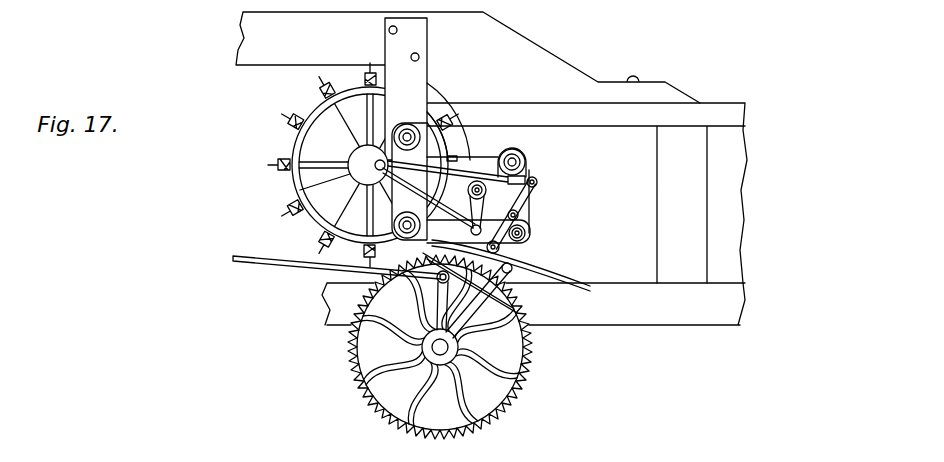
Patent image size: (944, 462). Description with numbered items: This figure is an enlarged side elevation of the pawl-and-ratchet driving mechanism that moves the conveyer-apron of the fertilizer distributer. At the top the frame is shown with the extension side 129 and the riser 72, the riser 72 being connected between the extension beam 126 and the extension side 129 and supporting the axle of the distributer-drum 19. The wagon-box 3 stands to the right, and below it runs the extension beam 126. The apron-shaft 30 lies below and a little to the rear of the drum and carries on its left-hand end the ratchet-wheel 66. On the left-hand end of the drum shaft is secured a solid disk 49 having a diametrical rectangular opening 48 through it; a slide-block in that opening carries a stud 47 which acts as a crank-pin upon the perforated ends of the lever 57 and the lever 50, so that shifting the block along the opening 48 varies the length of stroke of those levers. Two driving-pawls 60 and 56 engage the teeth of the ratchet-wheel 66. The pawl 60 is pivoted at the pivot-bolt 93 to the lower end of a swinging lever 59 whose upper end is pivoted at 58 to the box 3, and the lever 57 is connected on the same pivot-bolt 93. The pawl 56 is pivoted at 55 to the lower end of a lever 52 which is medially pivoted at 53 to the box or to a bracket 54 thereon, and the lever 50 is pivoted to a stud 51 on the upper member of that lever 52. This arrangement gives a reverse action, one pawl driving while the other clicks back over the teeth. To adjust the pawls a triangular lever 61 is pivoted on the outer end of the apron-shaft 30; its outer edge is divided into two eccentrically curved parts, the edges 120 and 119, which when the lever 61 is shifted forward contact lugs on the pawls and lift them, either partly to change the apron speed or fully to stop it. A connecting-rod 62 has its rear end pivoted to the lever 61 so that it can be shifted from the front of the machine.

The wagon-box 3 is at (642, 157).
The distributer-drum 19 is at (315, 101).
The apron-shaft 30 is at (452, 352).
The stud 47 is at (355, 152).
The diametrical rectangular opening 48 is at (350, 174).
The solid disk 49 is at (375, 168).
The lever 50 is at (510, 150).
The stud 51 is at (523, 200).
The lever 52 is at (520, 212).
The pivot 53 is at (530, 212).
The bracket 54 is at (432, 117).
The pivot 55 is at (498, 247).
The driving-pawl 56 is at (526, 225).
The lever 57 is at (433, 203).
The pivot 58 is at (478, 182).
The swinging lever 59 is at (534, 178).
The driving-pawl 60 is at (515, 269).
The triangular lever 61 is at (467, 334).
The connecting-rod 62 is at (270, 266).
The ratchet-wheel 66 is at (358, 392).
The riser 72 is at (408, 88).
The pivot-bolt 93 is at (472, 226).
The edge 119 is at (503, 271).
The edge 120 is at (505, 289).
The extension beam 126 is at (533, 304).
The extension side 129 is at (468, 57).